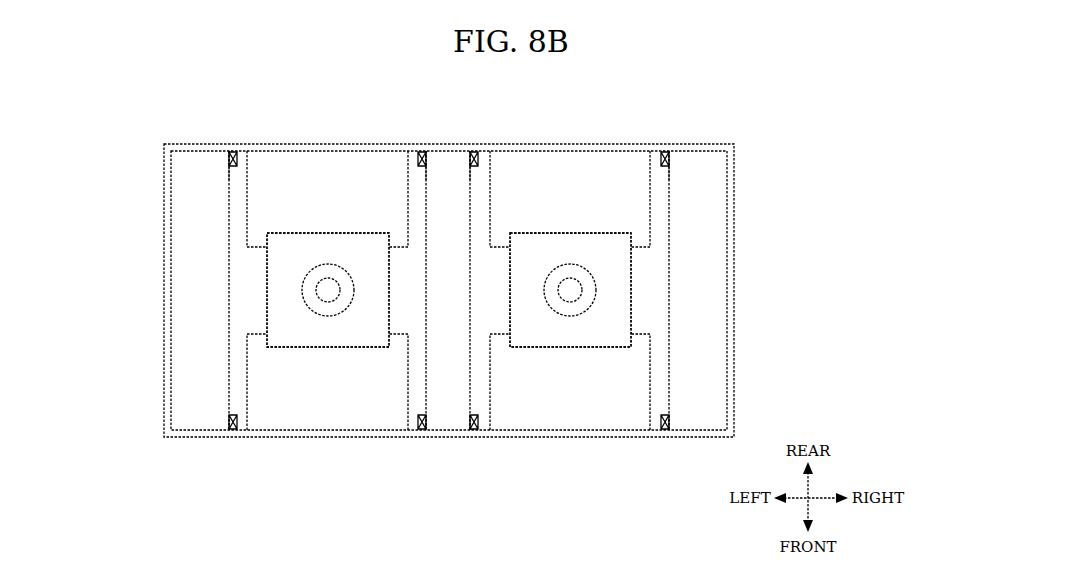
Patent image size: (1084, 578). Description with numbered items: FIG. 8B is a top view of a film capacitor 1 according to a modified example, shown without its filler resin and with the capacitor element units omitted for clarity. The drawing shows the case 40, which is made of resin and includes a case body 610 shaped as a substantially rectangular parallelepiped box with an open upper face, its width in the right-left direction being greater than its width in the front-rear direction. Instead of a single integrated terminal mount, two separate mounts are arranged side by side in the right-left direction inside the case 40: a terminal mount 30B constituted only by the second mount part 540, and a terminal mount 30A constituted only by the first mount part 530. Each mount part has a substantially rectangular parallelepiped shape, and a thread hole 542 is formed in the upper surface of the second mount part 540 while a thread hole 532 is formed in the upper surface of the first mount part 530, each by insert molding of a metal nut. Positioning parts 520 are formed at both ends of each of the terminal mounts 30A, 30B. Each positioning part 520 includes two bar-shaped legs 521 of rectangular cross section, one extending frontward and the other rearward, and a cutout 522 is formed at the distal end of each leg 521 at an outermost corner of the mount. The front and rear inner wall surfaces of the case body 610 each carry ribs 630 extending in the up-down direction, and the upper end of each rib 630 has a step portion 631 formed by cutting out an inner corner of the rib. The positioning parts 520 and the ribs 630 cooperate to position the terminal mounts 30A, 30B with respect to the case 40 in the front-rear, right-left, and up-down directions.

The image forming apparatus 1 is at (136, 286).
The case 40 is at (745, 183).
The case body 610 is at (733, 250).
The positioning part 520 is at (228, 285).
The bar-shaped leg 521 is at (248, 218).
The cutout 522 is at (228, 153).
The first mount part 530 is at (553, 348).
The thread hole 532 is at (565, 265).
The second mount part 540 is at (318, 349).
The thread hole 542 is at (332, 264).
The rib 630 is at (235, 151).
The step portion 631 is at (228, 174).
The terminal mount 30A is at (577, 353).
The terminal mount 30B is at (335, 350).